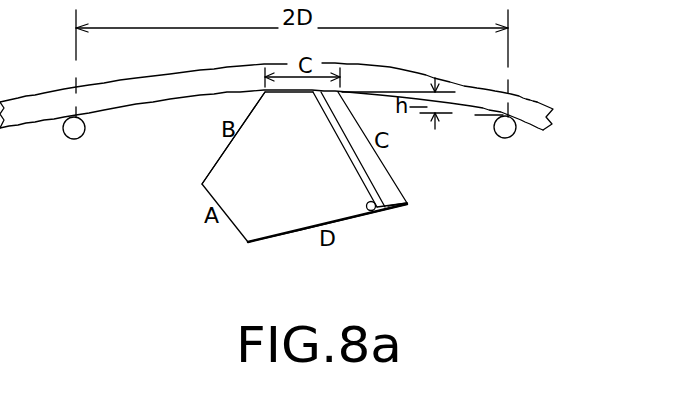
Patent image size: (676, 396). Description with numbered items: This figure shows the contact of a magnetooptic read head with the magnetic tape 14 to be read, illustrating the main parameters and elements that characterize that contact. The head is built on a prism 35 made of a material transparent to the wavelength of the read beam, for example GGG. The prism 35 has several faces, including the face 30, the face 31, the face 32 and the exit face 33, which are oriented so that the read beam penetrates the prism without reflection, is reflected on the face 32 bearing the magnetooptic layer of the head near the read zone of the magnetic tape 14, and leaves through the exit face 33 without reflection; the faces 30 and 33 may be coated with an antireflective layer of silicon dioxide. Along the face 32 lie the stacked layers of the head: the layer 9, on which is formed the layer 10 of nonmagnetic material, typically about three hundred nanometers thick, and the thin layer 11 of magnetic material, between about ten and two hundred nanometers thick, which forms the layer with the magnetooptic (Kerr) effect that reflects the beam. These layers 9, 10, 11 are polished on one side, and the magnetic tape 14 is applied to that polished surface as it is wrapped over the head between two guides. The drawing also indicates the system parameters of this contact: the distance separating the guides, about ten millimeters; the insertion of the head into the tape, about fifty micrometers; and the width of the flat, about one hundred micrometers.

The magnetic tape 14 is at (528, 110).
The face of the prism 30 is at (232, 224).
The face of the prism 31 is at (220, 160).
The face of the prism bearing the magnetooptic layer 32 is at (346, 154).
The layer 9 is at (394, 182).
The layer of nonmagnetic material 10 is at (400, 205).
The thin layer of magnetic material 11 is at (377, 211).
The exit face of the prism 33 is at (354, 222).
The prism 35 is at (275, 208).